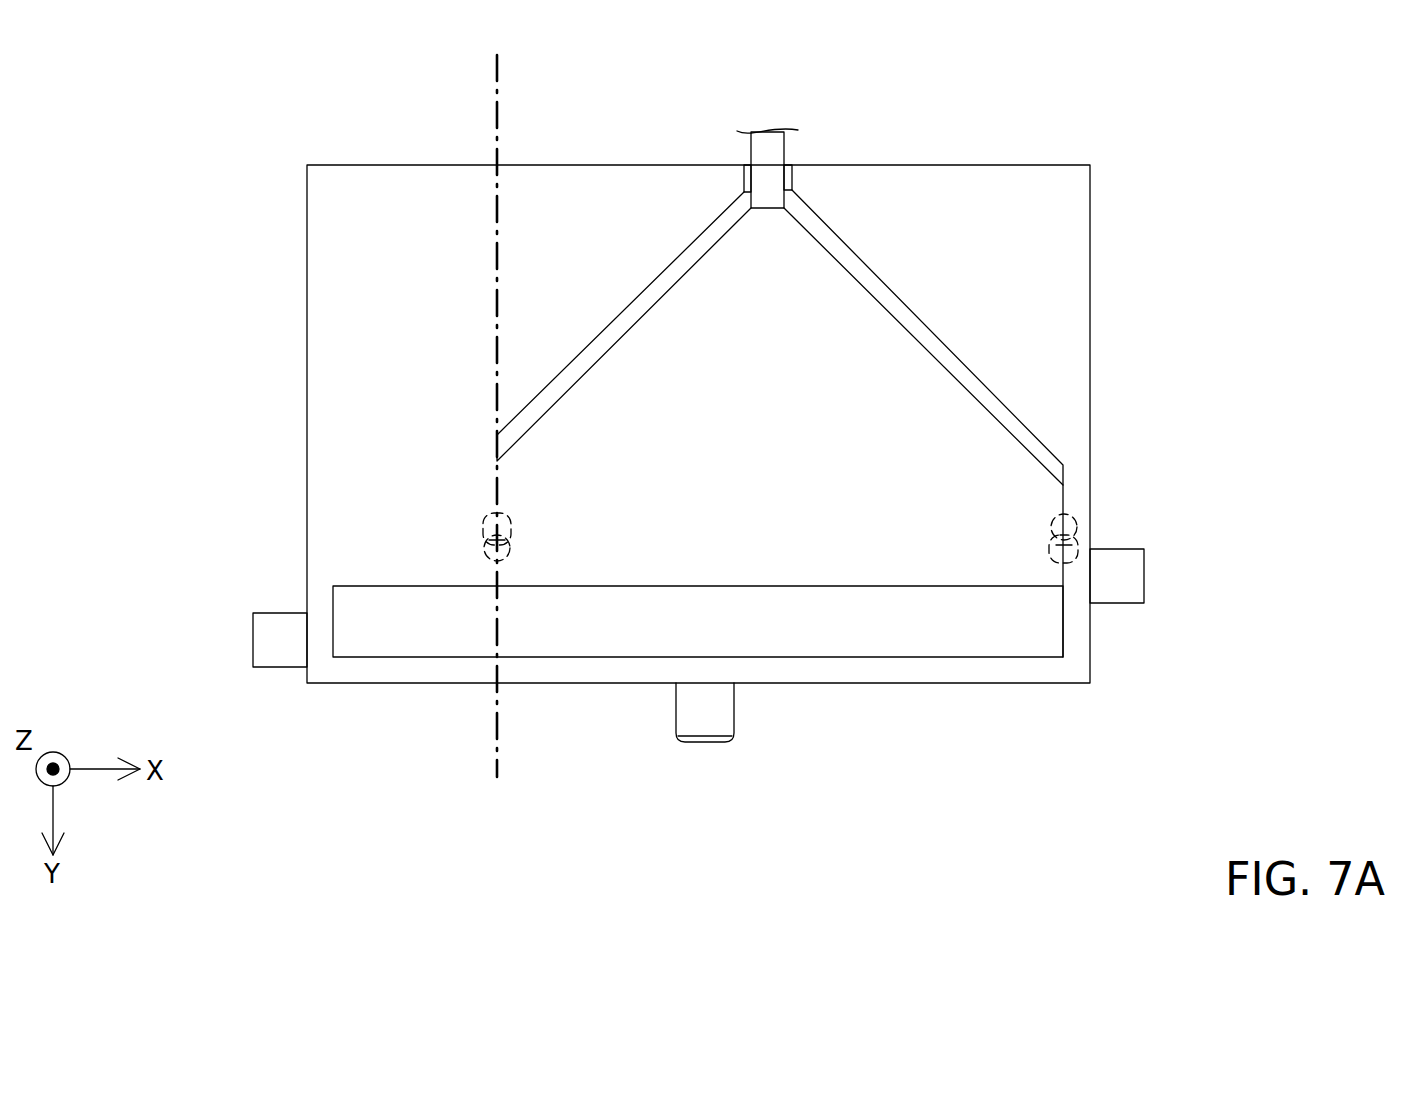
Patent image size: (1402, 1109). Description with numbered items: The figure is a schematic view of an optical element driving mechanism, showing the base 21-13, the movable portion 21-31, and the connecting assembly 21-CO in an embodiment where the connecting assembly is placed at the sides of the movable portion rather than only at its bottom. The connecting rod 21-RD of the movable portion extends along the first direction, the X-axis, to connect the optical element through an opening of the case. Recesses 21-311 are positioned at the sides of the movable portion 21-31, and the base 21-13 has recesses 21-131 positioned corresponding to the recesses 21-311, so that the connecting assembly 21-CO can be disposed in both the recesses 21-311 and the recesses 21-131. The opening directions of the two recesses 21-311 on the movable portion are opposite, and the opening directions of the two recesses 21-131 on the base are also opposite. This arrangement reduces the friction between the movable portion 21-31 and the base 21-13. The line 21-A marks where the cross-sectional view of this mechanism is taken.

The base 21-13 is at (989, 207).
The connecting rod 21-RD is at (768, 158).
The movable portion 21-31 is at (863, 515).
The recesses 21-311 is at (490, 513).
The recesses 21-131 is at (483, 535).
The connecting assembly 21-CO is at (484, 558).
The line 21-A- 21-A is at (495, 74).